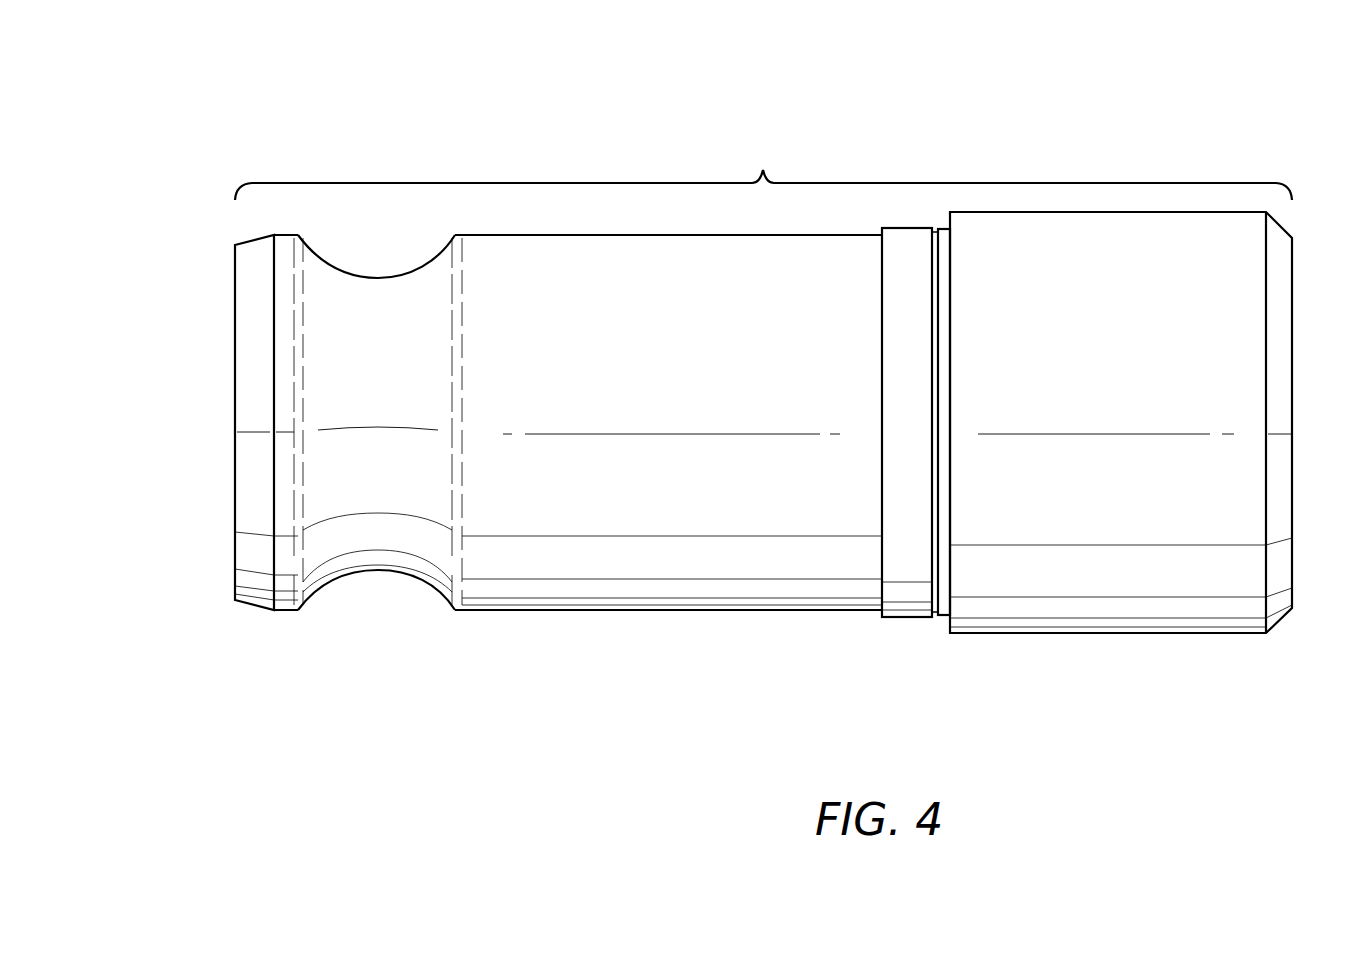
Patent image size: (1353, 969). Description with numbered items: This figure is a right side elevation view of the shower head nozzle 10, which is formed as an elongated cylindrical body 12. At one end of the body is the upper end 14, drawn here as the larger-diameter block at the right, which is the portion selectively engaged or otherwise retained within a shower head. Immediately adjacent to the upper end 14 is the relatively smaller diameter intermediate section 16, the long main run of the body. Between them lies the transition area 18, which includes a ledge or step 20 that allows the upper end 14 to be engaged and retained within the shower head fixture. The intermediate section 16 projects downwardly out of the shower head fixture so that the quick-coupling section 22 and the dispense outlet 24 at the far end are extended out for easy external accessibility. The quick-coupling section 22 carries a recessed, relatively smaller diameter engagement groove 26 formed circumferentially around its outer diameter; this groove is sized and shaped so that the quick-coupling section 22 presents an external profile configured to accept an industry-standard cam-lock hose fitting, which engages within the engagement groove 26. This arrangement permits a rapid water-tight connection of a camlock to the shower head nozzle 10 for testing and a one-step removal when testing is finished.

The shower head nozzle 10 is at (502, 125).
The elongated cylindrical body 12 is at (763, 170).
The upper end 14 is at (1110, 575).
The intermediate section 16 is at (648, 558).
The transition area 18 is at (927, 632).
The ledge or step 20 is at (946, 605).
The quick-coupling section 22 is at (378, 602).
The dispense outlet 24 is at (197, 533).
The engagement groove 26 is at (378, 337).